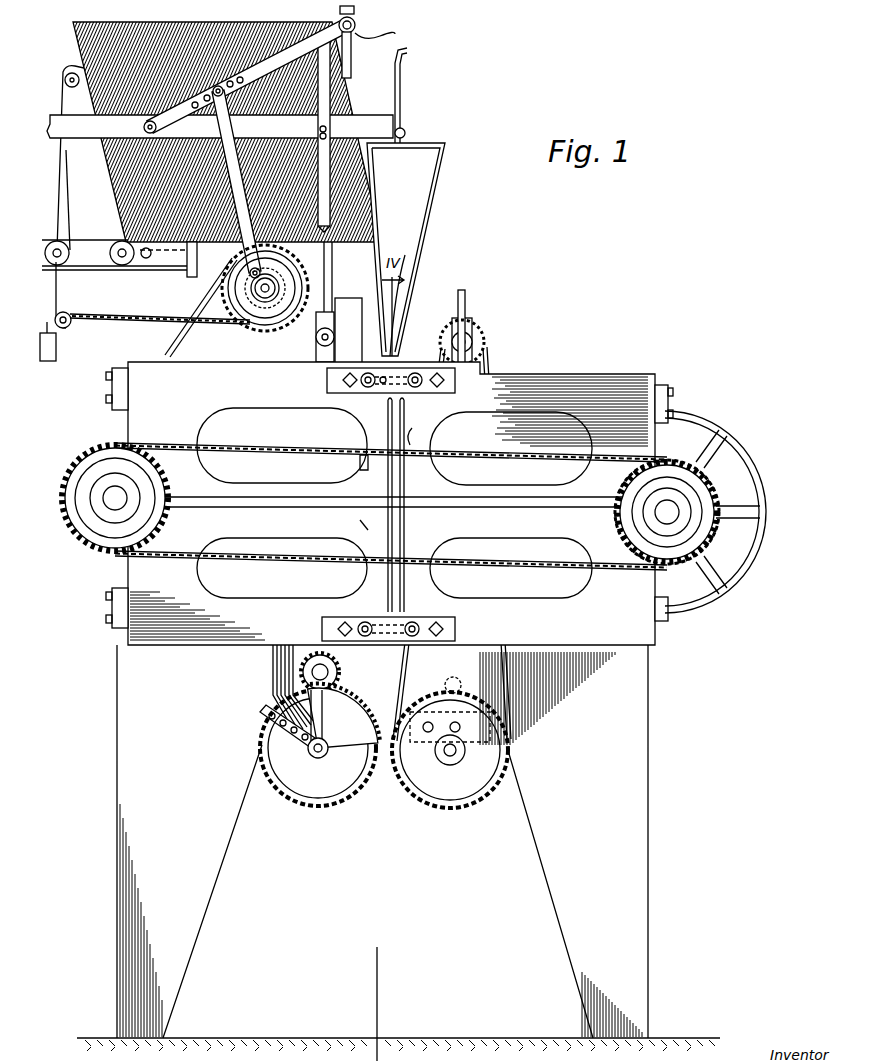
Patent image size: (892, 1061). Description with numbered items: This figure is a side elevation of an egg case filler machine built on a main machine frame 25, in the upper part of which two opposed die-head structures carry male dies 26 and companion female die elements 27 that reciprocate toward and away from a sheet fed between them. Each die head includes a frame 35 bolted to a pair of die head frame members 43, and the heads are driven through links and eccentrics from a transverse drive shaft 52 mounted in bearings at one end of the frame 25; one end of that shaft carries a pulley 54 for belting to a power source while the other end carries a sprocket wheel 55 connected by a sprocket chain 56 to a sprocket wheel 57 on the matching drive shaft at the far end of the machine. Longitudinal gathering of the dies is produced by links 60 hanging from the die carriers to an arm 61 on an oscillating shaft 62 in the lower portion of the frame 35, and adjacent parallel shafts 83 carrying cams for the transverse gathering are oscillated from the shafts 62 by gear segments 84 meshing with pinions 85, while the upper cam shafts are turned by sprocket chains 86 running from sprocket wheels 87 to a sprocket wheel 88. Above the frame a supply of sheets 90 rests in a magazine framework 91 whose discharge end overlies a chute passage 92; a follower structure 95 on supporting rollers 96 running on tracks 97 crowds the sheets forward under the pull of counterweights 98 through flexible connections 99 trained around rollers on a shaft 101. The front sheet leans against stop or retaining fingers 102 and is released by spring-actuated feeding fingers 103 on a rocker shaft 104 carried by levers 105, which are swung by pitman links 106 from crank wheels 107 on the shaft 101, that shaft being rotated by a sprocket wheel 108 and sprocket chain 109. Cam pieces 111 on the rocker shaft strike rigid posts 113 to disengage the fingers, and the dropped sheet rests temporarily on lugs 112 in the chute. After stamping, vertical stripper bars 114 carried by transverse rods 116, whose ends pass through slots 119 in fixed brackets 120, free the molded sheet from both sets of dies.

The main machine frame 25 is at (648, 375).
The male dies 26 is at (410, 440).
The female die elements 27 is at (362, 470).
The frame 35 is at (466, 300).
The die head frame members 43 is at (395, 506).
The transverse drive shaft 52 is at (672, 510).
The pulley 54 is at (730, 440).
The sprocket wheel 55 is at (705, 537).
The sprocket chain 56 is at (265, 448).
The sprocket wheel 57 is at (85, 470).
The links 60 is at (273, 668).
The arm 61 is at (262, 718).
The oscillating shaft 62 is at (315, 748).
The shafts 83 is at (327, 337).
The gear segments 84 is at (322, 628).
The pinions 85 is at (345, 765).
The sprocket chains 86 is at (297, 790).
The sprocket wheels 87 is at (298, 340).
The sprocket wheel 88 is at (486, 350).
The sheets 90 is at (118, 24).
The magazine framework 91 is at (327, 258).
The chute passage 92 is at (415, 218).
The follower structure 95 is at (78, 55).
The supporting rollers 96 is at (115, 248).
The tracks 97 is at (105, 272).
The counterweights 98 is at (58, 350).
The flexible connections 99 is at (85, 310).
The shaft 101 is at (262, 300).
The stop or retaining fingers 102 is at (358, 123).
The feeding fingers 103 is at (350, 86).
The rocker shaft 104 is at (393, 34).
The levers 105 is at (310, 48).
The pitman links 106 is at (232, 80).
The crank wheels 107 is at (222, 318).
The sprocket wheel 108 is at (263, 335).
The sprocket chain 109 is at (175, 337).
The cam pieces 111 is at (355, 15).
The lugs 112 is at (410, 278).
The rigid posts 113 is at (403, 64).
The stripper bars 114 is at (360, 540).
The transverse rods 116 is at (362, 386).
The slots 119 is at (383, 386).
The fixed brackets 120 is at (327, 385).